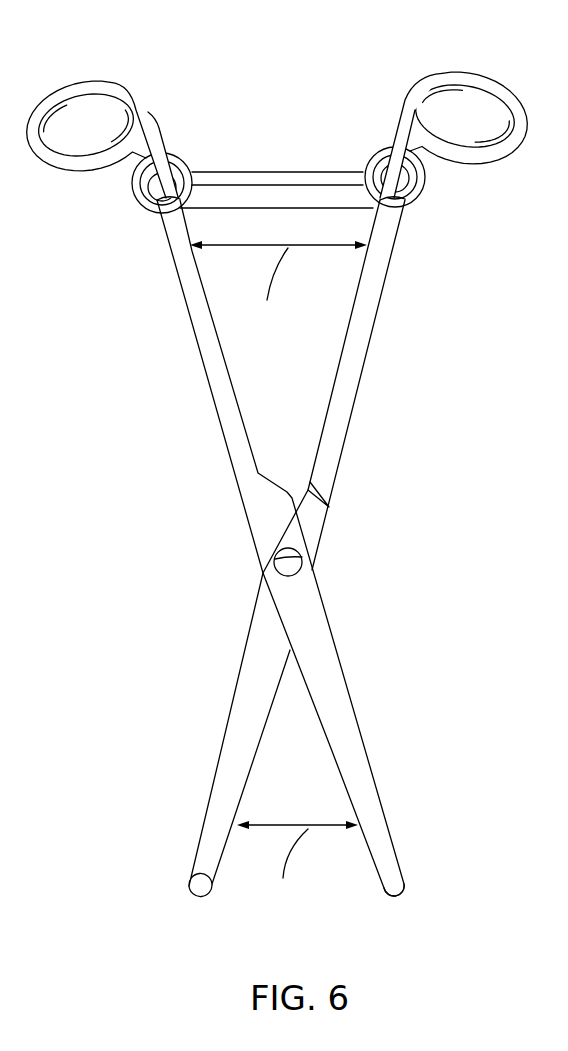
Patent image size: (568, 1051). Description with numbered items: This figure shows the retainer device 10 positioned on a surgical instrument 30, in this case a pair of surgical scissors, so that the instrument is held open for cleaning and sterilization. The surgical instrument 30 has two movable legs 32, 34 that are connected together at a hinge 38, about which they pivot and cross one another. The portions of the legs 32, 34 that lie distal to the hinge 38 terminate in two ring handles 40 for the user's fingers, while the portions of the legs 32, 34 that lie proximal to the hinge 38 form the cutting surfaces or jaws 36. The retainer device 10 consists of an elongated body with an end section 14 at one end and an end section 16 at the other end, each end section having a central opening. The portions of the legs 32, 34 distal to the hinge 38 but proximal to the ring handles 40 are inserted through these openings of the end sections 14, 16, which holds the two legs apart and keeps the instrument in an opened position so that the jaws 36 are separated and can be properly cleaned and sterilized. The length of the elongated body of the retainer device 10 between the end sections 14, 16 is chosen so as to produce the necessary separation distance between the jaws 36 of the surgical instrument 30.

The retainer device 10 is at (278, 190).
The end section 14 is at (398, 179).
The end section 16 is at (155, 187).
The surgical instrument 30 is at (277, 490).
The leg 32 is at (386, 240).
The leg 34 is at (172, 240).
The jaws 36 is at (197, 898).
The hinge 38 is at (287, 566).
The ring handles 40 is at (95, 105).